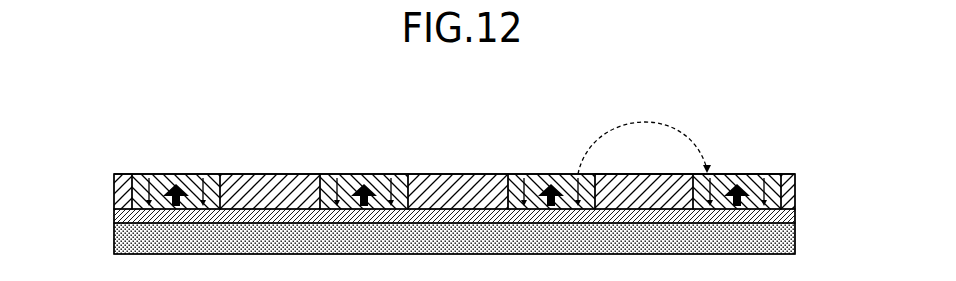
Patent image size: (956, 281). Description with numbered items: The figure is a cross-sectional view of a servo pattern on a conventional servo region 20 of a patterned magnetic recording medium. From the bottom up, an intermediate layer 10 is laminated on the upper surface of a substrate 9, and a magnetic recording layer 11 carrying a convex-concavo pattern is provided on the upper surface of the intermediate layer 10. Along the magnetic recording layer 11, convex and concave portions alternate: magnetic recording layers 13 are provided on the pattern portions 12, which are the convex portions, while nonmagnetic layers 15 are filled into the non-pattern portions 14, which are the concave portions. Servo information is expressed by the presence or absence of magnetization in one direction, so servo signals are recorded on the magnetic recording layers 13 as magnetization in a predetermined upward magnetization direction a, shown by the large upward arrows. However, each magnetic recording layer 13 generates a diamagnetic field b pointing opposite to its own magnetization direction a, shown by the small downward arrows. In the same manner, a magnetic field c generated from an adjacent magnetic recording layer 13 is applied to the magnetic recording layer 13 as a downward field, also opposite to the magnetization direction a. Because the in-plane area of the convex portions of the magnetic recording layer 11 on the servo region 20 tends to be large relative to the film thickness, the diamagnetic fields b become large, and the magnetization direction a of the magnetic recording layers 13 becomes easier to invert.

The servo region 20 is at (152, 137).
The substrate 9 is at (790, 238).
The intermediate layer 10 is at (790, 214).
The magnetic recording layer 11 is at (797, 174).
The pattern portion 12 is at (761, 178).
The magnetic recording layer 13 is at (459, 147).
The non-pattern portion 14 is at (676, 178).
The nonmagnetic layer 15 is at (269, 178).
The magnetization direction a is at (738, 182).
The diamagnetic field b is at (726, 172).
The magnetic field c is at (648, 121).